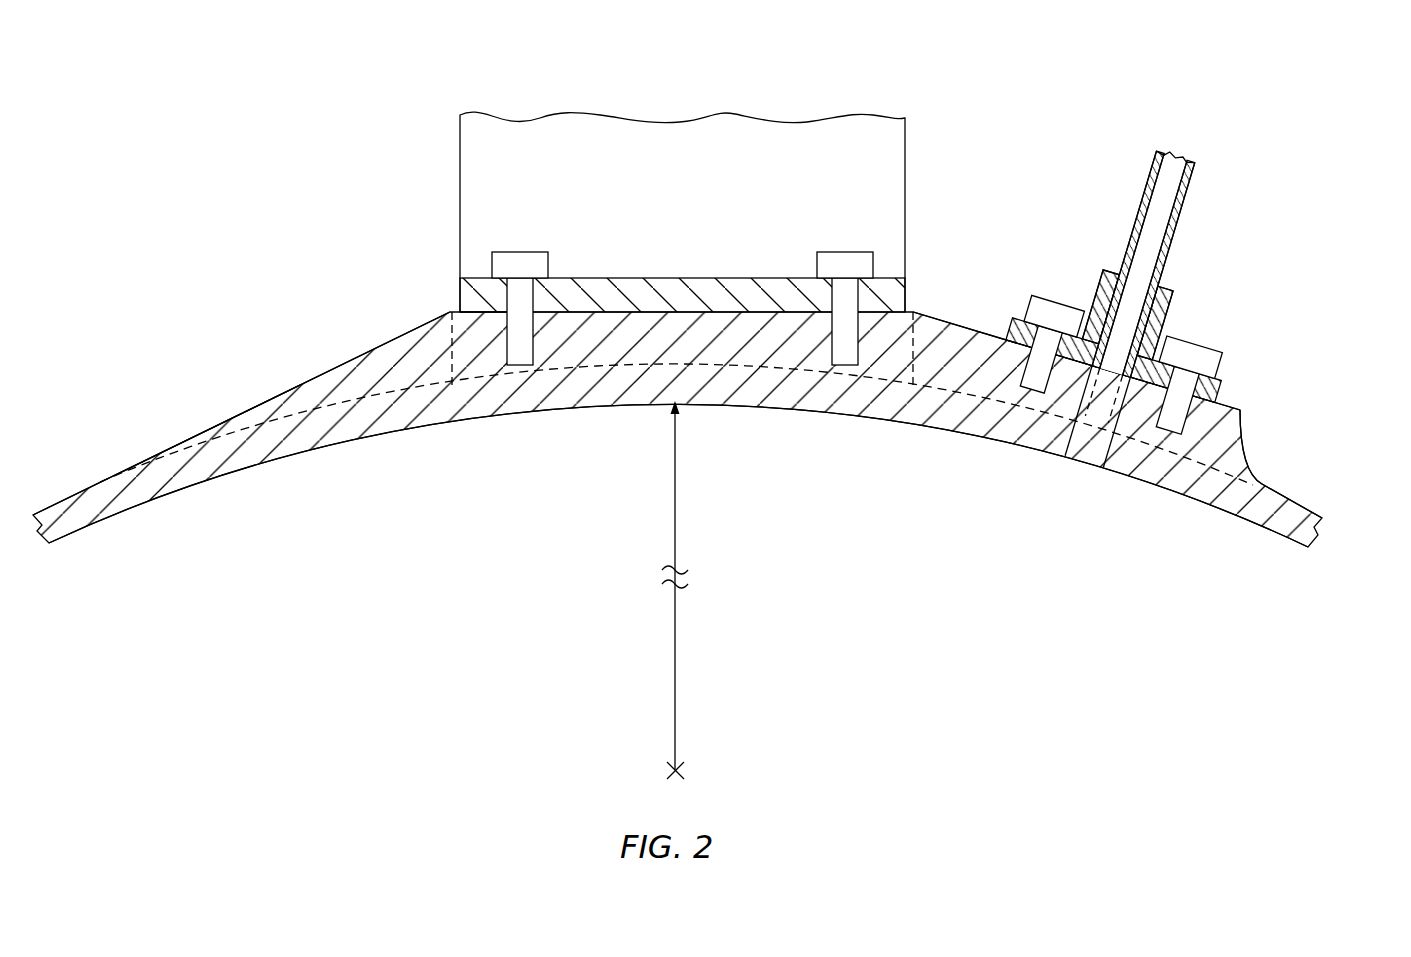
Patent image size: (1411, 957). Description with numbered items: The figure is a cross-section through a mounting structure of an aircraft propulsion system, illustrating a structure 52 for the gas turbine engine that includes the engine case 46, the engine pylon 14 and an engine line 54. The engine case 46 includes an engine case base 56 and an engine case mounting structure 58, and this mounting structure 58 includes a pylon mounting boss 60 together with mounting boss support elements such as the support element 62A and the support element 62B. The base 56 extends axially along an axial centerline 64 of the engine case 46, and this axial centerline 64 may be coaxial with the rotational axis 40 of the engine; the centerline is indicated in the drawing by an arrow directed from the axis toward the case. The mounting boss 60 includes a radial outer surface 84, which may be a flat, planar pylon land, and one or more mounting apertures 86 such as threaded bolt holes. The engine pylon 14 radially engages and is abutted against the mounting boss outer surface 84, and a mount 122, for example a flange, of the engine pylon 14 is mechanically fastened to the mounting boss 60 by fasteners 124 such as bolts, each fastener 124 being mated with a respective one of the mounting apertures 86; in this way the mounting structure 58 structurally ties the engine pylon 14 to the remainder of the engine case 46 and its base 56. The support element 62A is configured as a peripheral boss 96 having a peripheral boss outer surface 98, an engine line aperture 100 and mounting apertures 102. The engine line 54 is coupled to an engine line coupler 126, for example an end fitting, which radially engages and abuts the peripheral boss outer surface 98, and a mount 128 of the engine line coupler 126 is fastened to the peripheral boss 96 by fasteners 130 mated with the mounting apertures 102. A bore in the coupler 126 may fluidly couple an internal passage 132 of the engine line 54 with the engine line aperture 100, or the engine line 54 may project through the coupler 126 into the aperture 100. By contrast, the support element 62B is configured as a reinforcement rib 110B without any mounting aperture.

The structure 52 is at (222, 140).
The engine pylon 14 is at (438, 158).
The fasteners 124 is at (528, 251).
The mount 122 is at (907, 288).
The radial outer surface 84 is at (473, 292).
The mounting apertures 86 is at (505, 337).
The engine case mounting structure 58 is at (348, 341).
The mounting boss support element 62B is at (210, 394).
The reinforcement rib 110B is at (205, 422).
The engine case 46 is at (94, 462).
The engine case base 56 is at (230, 485).
The pylon mounting boss 60 is at (587, 385).
The rotational axis 40 is at (740, 590).
The axial centerline 64 is at (686, 768).
The internal passage 132 is at (1172, 155).
The engine line 54 is at (1203, 201).
The engine line coupler 126 is at (1185, 318).
The fasteners 130 is at (1060, 292).
The mount 128 is at (1015, 318).
The peripheral boss outer surface 98 is at (1230, 400).
The mounting boss support element 62A is at (1322, 461).
The peripheral boss 96 is at (1252, 437).
The engine line aperture 100 is at (1092, 445).
The mounting apertures 102 is at (1050, 372).